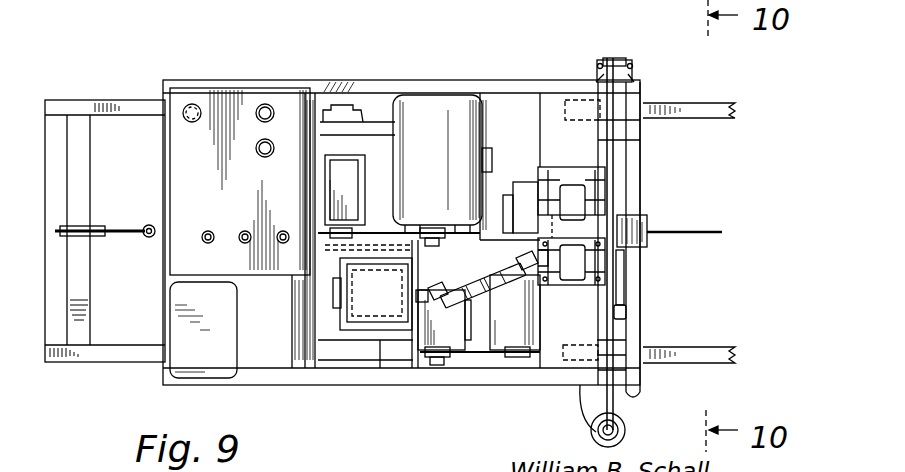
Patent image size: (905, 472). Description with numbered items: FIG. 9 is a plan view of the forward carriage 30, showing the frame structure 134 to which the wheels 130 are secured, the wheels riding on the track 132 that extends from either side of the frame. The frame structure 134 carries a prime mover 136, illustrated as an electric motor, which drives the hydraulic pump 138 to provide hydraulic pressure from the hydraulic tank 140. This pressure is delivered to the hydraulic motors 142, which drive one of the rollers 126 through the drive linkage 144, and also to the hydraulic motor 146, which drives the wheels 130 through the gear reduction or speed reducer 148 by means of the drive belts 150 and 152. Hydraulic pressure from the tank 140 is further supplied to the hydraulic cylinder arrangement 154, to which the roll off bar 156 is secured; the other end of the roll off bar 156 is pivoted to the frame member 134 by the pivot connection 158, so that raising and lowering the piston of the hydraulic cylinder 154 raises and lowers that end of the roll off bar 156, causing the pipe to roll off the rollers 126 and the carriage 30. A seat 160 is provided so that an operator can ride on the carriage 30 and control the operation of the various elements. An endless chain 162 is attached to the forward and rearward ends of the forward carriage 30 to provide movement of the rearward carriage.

The forward carriage 30 is at (506, 78).
The rollers 126 is at (574, 195).
The wheels 130 is at (570, 100).
The track 132 is at (696, 103).
The frame structure 134 is at (386, 80).
The prime mover 136 is at (453, 95).
The hydraulic pump 138 is at (343, 180).
The hydraulic tank 140 is at (240, 198).
The hydraulic motors 142 is at (392, 300).
The drive linkage 144 is at (492, 258).
The hydraulic motor 146 is at (460, 325).
The speed reducer 148 is at (535, 321).
The drive belt 150 is at (378, 228).
The drive belt 152 is at (490, 225).
The hydraulic cylinder arrangement 154 is at (626, 430).
The roll off bar 156 is at (614, 296).
The pivot connection 158 is at (630, 72).
The seat 160 is at (180, 308).
The endless chain 162 is at (116, 240).